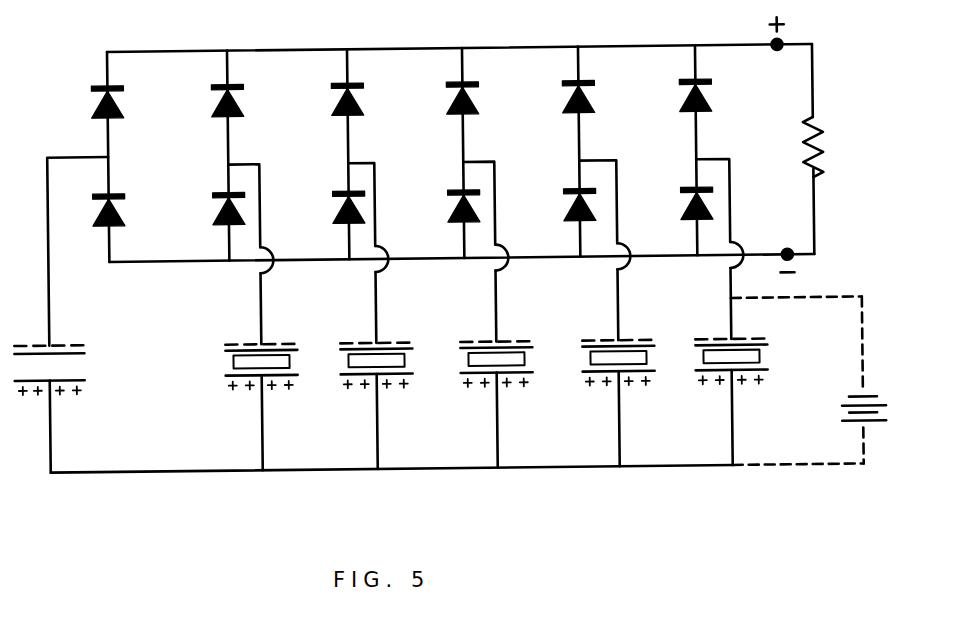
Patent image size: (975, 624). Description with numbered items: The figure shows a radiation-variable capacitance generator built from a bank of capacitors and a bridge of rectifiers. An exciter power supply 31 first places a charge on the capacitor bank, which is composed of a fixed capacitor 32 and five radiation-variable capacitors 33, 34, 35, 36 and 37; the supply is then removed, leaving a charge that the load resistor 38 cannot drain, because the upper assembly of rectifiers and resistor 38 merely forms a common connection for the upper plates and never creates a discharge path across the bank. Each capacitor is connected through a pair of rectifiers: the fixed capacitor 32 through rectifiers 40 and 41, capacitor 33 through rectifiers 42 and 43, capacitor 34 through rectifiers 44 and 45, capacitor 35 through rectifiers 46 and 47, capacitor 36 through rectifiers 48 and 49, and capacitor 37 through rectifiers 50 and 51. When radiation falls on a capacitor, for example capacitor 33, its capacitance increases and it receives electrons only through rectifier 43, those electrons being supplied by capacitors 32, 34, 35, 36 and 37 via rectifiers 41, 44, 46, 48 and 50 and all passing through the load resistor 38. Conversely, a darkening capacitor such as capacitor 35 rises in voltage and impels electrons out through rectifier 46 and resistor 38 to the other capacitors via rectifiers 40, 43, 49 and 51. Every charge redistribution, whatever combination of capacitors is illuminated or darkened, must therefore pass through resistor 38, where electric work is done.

The exciter power supply 31 is at (870, 390).
The fixed capacitor 32 is at (90, 382).
The radiation-variable capacitor 33 is at (293, 392).
The radiation-variable capacitor 34 is at (415, 392).
The radiation-variable capacitor 35 is at (535, 387).
The radiation-variable capacitor 36 is at (653, 387).
The radiation-variable capacitor 37 is at (762, 387).
The load resistor 38 is at (823, 137).
The rectifier 40 is at (72, 94).
The rectifier 41 is at (120, 205).
The rectifier 42 is at (213, 210).
The rectifier 43 is at (213, 102).
The rectifier 44 is at (337, 207).
The rectifier 45 is at (330, 103).
The rectifier 46 is at (452, 207).
The rectifier 47 is at (447, 103).
The rectifier 48 is at (568, 205).
The rectifier 49 is at (563, 100).
The rectifier 50 is at (683, 205).
The rectifier 51 is at (680, 100).